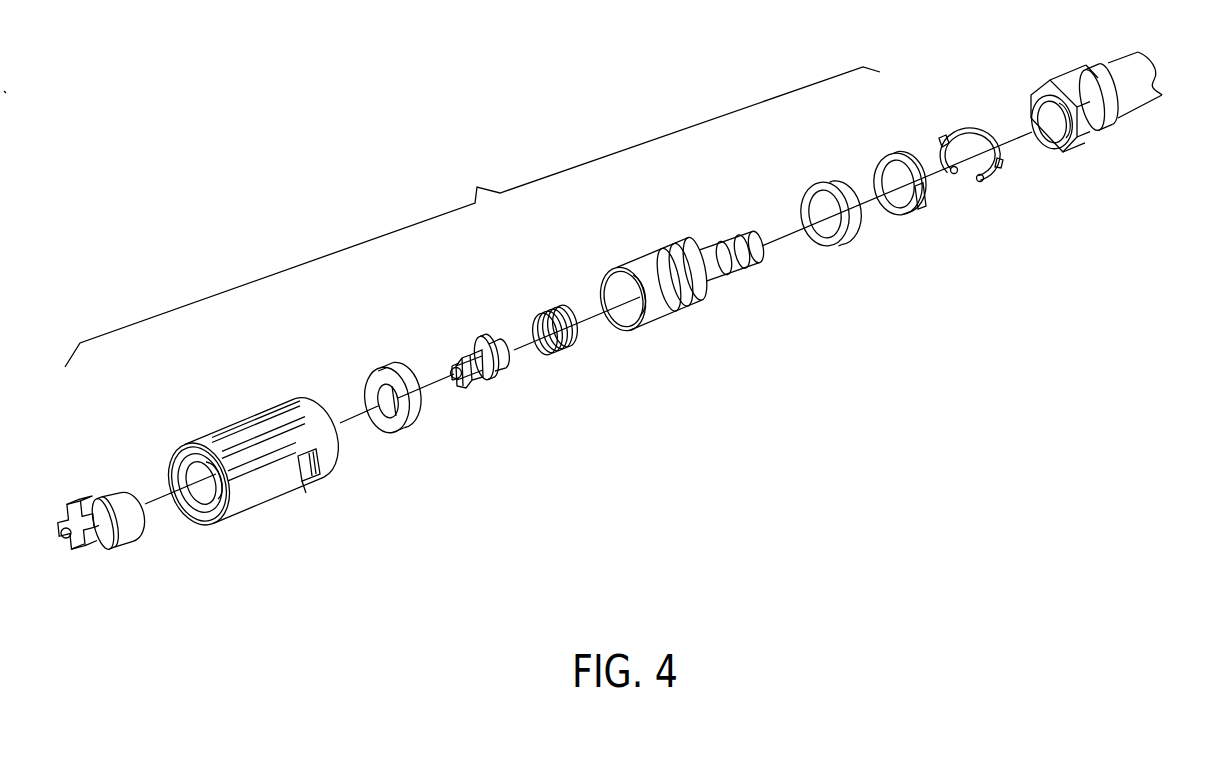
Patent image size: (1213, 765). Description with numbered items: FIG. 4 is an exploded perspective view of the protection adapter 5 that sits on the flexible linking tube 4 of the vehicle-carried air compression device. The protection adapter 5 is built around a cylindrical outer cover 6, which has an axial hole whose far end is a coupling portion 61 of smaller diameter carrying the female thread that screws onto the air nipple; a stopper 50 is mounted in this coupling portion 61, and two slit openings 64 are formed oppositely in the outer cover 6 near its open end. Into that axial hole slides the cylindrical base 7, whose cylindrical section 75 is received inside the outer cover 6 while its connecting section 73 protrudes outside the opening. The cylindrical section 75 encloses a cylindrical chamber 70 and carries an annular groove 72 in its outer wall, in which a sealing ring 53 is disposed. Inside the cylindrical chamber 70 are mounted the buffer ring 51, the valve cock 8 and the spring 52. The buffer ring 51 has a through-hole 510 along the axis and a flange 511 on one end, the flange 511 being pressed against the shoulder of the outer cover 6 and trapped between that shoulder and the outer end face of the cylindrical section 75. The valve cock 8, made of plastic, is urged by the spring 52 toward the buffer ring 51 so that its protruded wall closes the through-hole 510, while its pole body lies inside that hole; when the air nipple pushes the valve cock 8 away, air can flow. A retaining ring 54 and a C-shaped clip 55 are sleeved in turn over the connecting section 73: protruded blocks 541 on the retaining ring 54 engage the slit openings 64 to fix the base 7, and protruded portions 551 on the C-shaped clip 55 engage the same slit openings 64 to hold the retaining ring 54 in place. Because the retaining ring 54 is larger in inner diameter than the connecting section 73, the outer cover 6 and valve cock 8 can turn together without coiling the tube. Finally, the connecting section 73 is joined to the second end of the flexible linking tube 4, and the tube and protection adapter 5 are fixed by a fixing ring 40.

The flexible linking tube 4 is at (1145, 88).
The fixing ring 40 is at (1092, 132).
The protection adapter 5 is at (472, 217).
The stopper 50 is at (128, 530).
The buffer ring 51 is at (392, 409).
The through-hole 510 is at (395, 431).
The flange 511 is at (380, 367).
The spring 52 is at (545, 308).
The sealing ring 53 is at (838, 247).
The retaining ring 54 is at (902, 203).
The protruded blocks 541 is at (878, 160).
The C-shaped clip 55 is at (978, 164).
The protruded portions 551 is at (943, 128).
The cylindrical outer cover 6 is at (260, 496).
The coupling portion 61 is at (190, 477).
The slit openings 64 is at (319, 472).
The cylindrical base 7 is at (687, 285).
The cylindrical chamber 70 is at (629, 312).
The annular groove 72 is at (697, 306).
The connecting section 73 is at (752, 232).
The cylindrical section 75 is at (667, 310).
The valve cock 8 is at (496, 381).